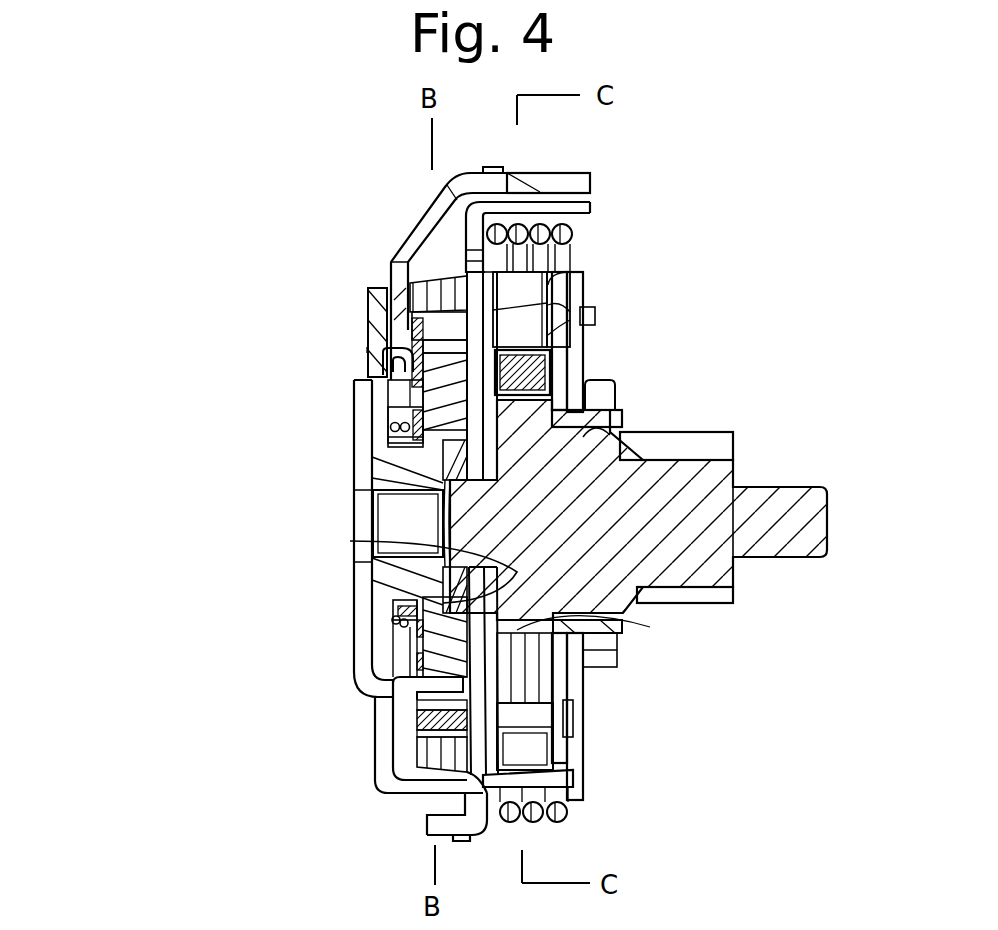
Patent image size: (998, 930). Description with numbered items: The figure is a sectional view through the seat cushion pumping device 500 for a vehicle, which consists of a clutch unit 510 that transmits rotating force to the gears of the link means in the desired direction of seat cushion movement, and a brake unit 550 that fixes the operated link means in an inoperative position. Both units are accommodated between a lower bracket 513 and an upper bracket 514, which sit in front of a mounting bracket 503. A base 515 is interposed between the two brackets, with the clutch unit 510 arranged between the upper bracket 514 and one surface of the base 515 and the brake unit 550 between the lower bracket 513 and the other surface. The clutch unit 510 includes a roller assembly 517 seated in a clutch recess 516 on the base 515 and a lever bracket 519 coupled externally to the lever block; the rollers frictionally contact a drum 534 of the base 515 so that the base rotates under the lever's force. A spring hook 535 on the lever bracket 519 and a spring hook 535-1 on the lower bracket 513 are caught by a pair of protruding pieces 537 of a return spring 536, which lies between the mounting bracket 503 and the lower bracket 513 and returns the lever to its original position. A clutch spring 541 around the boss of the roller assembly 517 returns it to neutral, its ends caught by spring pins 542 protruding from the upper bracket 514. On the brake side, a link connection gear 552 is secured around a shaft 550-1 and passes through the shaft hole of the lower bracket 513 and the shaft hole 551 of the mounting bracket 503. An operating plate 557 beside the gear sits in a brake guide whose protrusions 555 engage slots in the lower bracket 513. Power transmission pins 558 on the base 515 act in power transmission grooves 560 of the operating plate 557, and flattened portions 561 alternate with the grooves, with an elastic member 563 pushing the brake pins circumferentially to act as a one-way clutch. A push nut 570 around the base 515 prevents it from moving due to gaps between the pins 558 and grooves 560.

The seat cushion pumping device 500 is at (852, 283).
The mounting bracket 503 is at (578, 718).
The clutch unit 510 is at (205, 497).
The lower bracket 513 is at (557, 358).
The upper bracket 514 is at (383, 783).
The base 515 is at (398, 303).
The clutch recess 516 is at (417, 737).
The roller assembly 517 is at (440, 717).
The lever bracket 519 is at (400, 240).
The drum 534 is at (420, 290).
The spring hook 535 is at (582, 178).
The spring hook 535-1 is at (582, 207).
The return spring 536 is at (574, 234).
The protruding pieces 537 is at (488, 167).
The clutch spring 541 is at (395, 427).
The spring pins 542 is at (375, 367).
The brake unit 550 is at (852, 388).
The shaft 550-1 is at (820, 520).
The shaft hole 551 is at (623, 433).
The link connection gear 552 is at (720, 443).
The protrusions 555 is at (535, 745).
The operating plate 557 is at (450, 548).
The power transmission pins 558 is at (576, 690).
The power transmission grooves 560 is at (587, 633).
The flattened portions 561 is at (587, 406).
The elastic member 563 is at (527, 352).
The push nut 570 is at (470, 273).